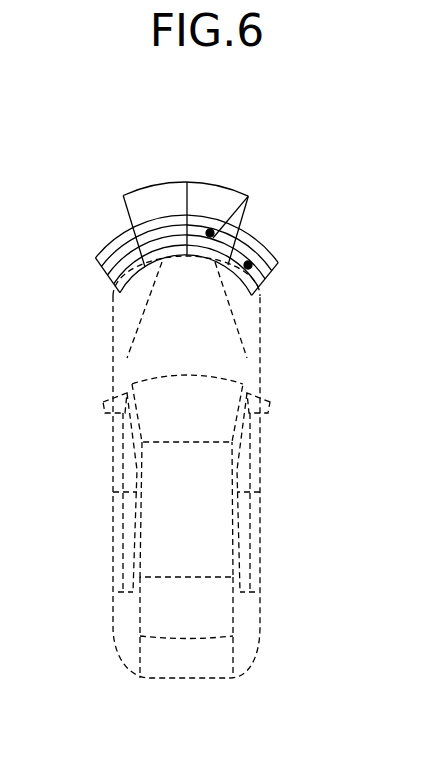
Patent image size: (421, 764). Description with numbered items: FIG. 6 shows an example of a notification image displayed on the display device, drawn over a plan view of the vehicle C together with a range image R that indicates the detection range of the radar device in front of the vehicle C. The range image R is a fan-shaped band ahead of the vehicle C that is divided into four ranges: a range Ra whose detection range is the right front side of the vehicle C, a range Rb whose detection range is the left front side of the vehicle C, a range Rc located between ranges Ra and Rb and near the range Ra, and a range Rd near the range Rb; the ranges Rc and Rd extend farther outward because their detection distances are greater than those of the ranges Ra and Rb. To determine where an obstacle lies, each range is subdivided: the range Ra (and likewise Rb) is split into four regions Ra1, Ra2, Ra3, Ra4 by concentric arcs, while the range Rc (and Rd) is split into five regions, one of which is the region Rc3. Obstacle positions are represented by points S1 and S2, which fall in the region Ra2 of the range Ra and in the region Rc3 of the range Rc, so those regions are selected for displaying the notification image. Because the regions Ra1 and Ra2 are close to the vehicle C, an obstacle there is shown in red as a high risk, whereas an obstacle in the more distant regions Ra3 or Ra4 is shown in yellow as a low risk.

The range image R is at (322, 128).
The range Ra is at (263, 234).
The range Rb is at (117, 246).
The range Rc is at (187, 183).
The range Rd is at (168, 186).
The region of range Rc Rc3 is at (248, 196).
The region Ra1 is at (259, 292).
The region Ra2 is at (264, 286).
The region Ra3 is at (271, 276).
The region Ra4 is at (279, 267).
The point S1 is at (248, 265).
The point S2 is at (210, 233).
The vehicle C is at (262, 462).